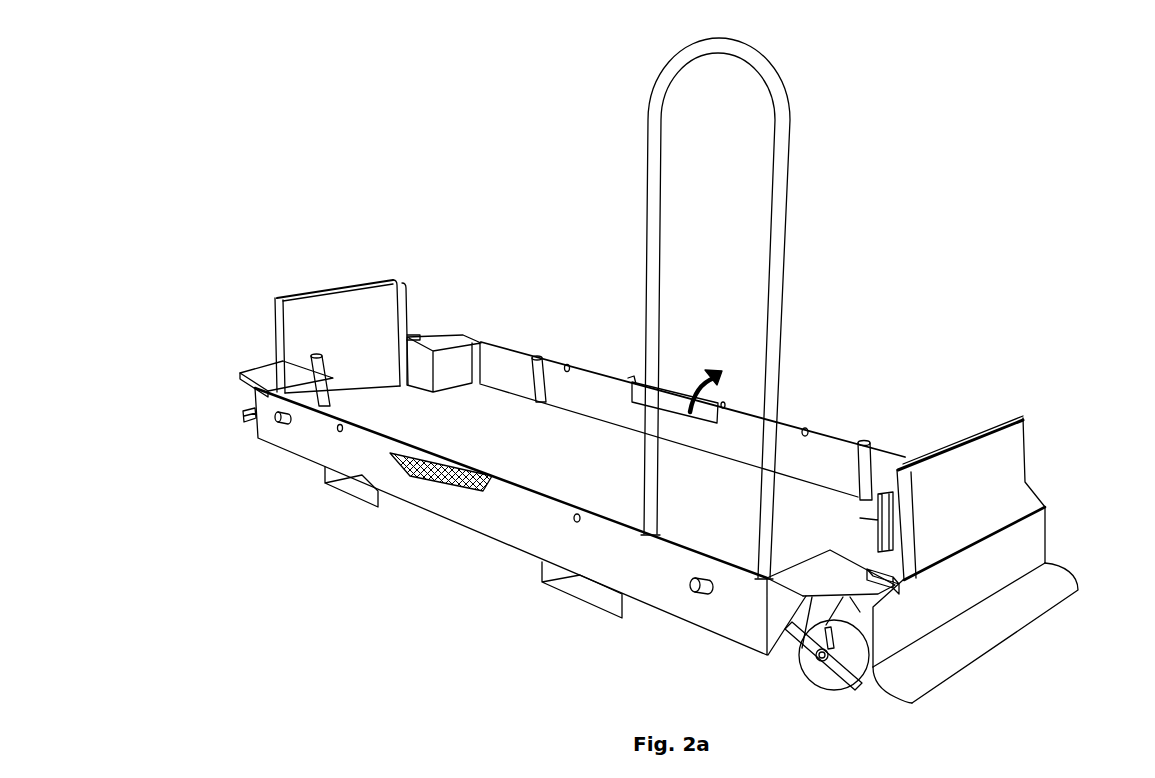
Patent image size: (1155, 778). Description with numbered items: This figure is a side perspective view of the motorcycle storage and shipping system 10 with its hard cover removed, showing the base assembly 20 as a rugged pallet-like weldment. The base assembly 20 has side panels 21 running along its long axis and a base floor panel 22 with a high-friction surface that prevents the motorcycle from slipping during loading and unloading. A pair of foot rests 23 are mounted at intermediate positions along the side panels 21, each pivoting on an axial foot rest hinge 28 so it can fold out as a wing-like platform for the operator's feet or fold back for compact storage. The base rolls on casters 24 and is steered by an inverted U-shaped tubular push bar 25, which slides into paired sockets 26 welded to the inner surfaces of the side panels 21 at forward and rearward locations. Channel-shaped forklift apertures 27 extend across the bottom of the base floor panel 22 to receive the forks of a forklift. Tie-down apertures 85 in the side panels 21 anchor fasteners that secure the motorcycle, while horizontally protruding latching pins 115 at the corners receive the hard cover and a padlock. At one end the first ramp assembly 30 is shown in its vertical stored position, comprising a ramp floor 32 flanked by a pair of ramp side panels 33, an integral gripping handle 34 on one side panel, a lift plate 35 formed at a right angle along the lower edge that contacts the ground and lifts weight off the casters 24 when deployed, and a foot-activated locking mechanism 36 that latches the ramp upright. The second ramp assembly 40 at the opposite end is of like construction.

The system 10 is at (256, 113).
The base assembly 20 is at (447, 541).
The side panels 21 is at (735, 555).
The base floor panel 22 is at (548, 413).
The foot rests 23 is at (672, 398).
The casters 24 is at (833, 678).
The push bar 25 is at (783, 220).
The sockets 26 is at (252, 388).
The forklift apertures 27 is at (362, 482).
The foot rest hinge 28 is at (632, 377).
The first ramp assembly 30 is at (1078, 631).
The ramp floor 32 is at (362, 375).
The ramp side panels 33 is at (398, 290).
The handle 34 is at (880, 521).
The lift plate 35 is at (243, 418).
The locking mechanism 36 is at (415, 337).
The second ramp assembly 40 is at (264, 355).
The tie-down apertures 85 is at (565, 365).
The latching pins 115 is at (276, 423).